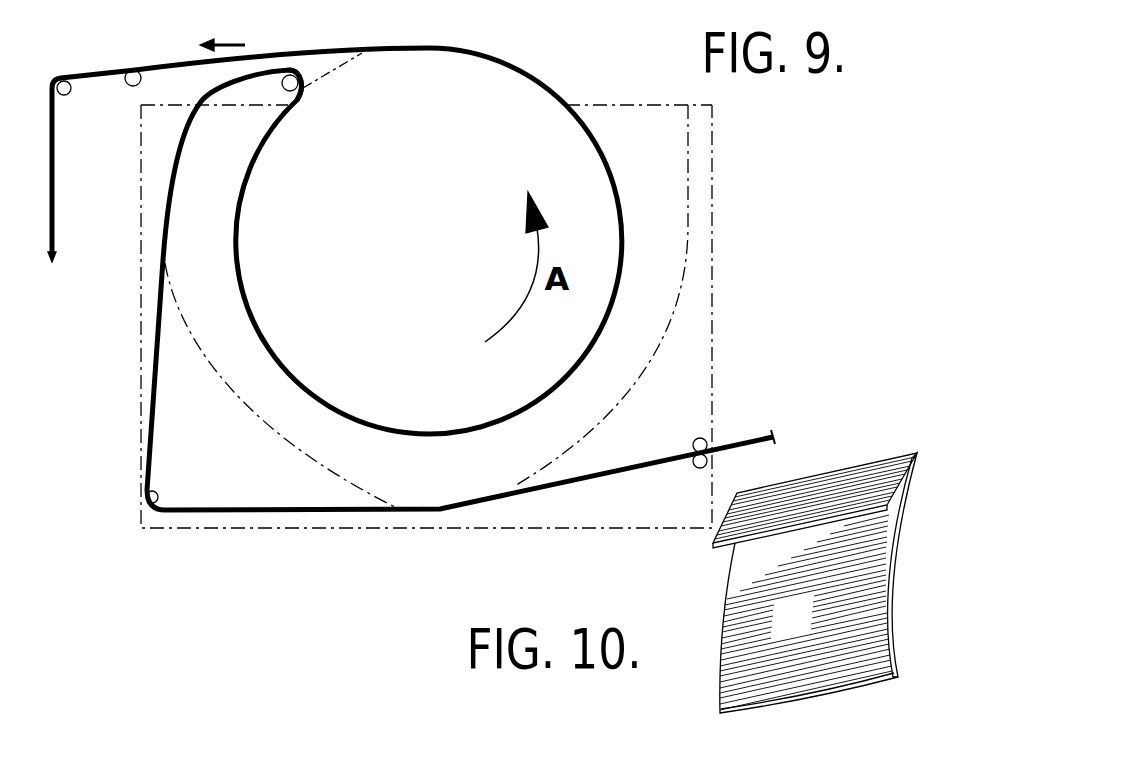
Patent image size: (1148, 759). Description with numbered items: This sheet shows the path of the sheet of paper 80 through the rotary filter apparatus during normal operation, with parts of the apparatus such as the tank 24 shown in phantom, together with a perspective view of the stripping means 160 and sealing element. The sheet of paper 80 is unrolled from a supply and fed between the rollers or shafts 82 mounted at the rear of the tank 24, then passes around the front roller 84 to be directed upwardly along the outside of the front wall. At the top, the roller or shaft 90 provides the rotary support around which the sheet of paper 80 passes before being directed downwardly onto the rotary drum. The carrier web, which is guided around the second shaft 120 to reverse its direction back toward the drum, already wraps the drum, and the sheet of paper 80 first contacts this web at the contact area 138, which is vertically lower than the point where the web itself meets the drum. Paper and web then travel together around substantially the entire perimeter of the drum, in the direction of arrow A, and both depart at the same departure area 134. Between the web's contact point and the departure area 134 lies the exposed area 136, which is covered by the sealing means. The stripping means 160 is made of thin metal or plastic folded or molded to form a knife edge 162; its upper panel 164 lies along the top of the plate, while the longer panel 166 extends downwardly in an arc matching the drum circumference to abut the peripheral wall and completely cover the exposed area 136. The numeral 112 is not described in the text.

In FIG. 9, the tank 24 is at (688, 178).
In FIG. 9, the sheet of paper 80 is at (751, 440).
In FIG. 9, the rollers or shafts 82 is at (704, 437).
In FIG. 9, the roller 84 is at (146, 492).
In FIG. 9, the roller or shaft 90 is at (288, 74).
In FIG. 9, the guide roller 112 is at (136, 71).
In FIG. 9, the second shaft 120 is at (64, 80).
In FIG. 9, the departure area 134 is at (369, 50).
In FIG. 9, the exposed area 136 is at (313, 80).
In FIG. 9, the contact area 138 is at (304, 93).
In FIG. 10, the stripping means 160 is at (793, 567).
In FIG. 10, the knife edge 162 is at (903, 453).
In FIG. 10, the upper panel 164 is at (875, 473).
In FIG. 10, the longer panel 166 is at (757, 565).